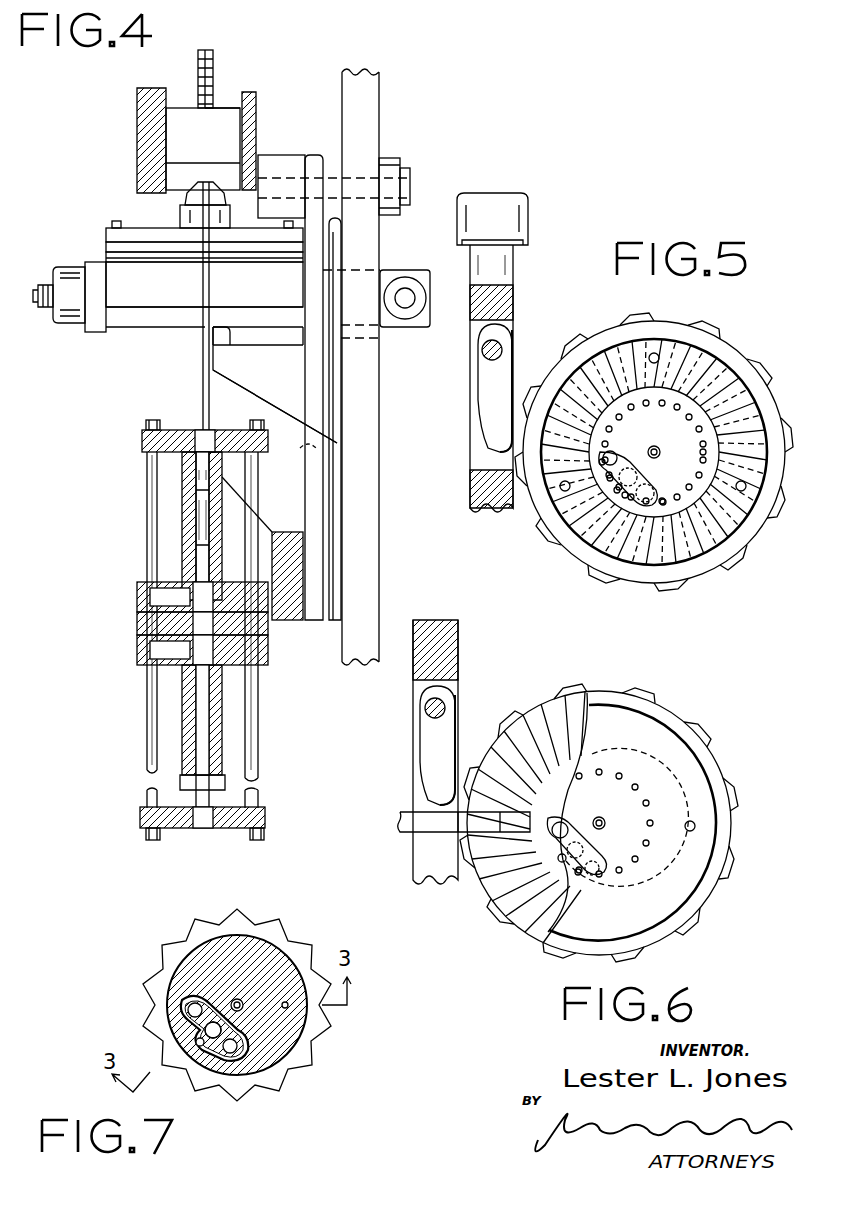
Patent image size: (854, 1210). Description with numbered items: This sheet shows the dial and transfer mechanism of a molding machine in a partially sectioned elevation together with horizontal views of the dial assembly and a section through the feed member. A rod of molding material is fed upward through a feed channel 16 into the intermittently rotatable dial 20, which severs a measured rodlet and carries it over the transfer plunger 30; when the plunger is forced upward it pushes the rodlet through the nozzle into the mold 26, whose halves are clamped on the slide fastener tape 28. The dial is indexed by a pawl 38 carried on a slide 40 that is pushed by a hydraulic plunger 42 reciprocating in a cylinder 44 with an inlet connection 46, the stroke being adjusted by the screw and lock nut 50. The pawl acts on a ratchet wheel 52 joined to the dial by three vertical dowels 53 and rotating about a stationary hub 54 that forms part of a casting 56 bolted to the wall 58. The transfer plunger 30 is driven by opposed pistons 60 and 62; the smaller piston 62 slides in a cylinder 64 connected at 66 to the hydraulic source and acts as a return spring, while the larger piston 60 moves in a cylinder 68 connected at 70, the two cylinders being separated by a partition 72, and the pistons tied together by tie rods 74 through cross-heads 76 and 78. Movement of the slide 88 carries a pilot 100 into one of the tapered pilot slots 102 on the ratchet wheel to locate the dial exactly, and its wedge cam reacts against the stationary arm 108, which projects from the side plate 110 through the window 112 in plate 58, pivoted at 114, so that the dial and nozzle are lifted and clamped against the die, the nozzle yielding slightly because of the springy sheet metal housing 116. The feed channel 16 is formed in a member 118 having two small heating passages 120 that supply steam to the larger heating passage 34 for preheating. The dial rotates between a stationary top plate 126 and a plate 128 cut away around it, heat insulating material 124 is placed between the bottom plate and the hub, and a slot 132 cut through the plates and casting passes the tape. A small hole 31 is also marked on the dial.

In FIG. 5, the feed channel 16 is at (614, 493).
In FIG. 6, the feed channel 16 is at (576, 876).
In FIG. 7, the feed channel 16 is at (200, 1047).
In FIG. 6, the dial 20 is at (657, 737).
In FIG. 4, the mold 26 is at (222, 108).
In FIG. 4, the slide fastener tape 28 is at (212, 50).
In FIG. 4, the transfer plunger 30 is at (203, 392).
In FIG. 5, the transfer plunger 30 is at (698, 360).
In FIG. 5, the hole 31 is at (700, 454).
In FIG. 7, the hole 31 is at (288, 1007).
In FIG. 7, the heating passage 34 is at (221, 1040).
In FIG. 5, the pawl 38 is at (478, 393).
In FIG. 6, the pawl 38 is at (424, 756).
In FIG. 5, the slide 40 is at (513, 300).
In FIG. 6, the slide 40 is at (458, 660).
In FIG. 5, the hydraulic plunger 42 is at (520, 228).
In FIG. 4, the cylinder 44 is at (392, 273).
In FIG. 4, the inlet connection 46 is at (405, 300).
In FIG. 4, the screw and lock nut 50 is at (48, 312).
In FIG. 5, the ratchet wheel 52 is at (750, 376).
In FIG. 6, the ratchet wheel 52 is at (730, 858).
In FIG. 5, the vertical dowels 53 is at (656, 352).
In FIG. 6, the vertical dowels 53 is at (696, 826).
In FIG. 6, the stationary hub 54 is at (559, 861).
In FIG. 7, the stationary hub 54 is at (200, 944).
In FIG. 4, the casting 56 is at (127, 302).
In FIG. 7, the casting 56 is at (262, 920).
In FIG. 4, the wall 58 is at (314, 503).
In FIG. 4, the piston 60 is at (196, 484).
In FIG. 4, the piston 62 is at (180, 776).
In FIG. 4, the cylinder 64 is at (182, 695).
In FIG. 4, the connection 66 is at (140, 650).
In FIG. 4, the cylinder 68 is at (186, 506).
In FIG. 4, the connection 70 is at (140, 604).
In FIG. 4, the partition 72 is at (140, 626).
In FIG. 4, the tie rods 74 is at (148, 566).
In FIG. 4, the cross-head 76 is at (145, 442).
In FIG. 4, the cross-head 78 is at (142, 818).
In FIG. 4, the slide 88 is at (216, 338).
In FIG. 6, the pilot 100 is at (410, 827).
In FIG. 6, the pilot slots 102 is at (532, 743).
In FIG. 4, the stationary arm 108 is at (238, 378).
In FIG. 4, the stationary side plate 110 is at (370, 557).
In FIG. 4, the window 112 is at (306, 456).
In FIG. 4, the pivot 114 is at (427, 180).
In FIG. 4, the sheet metal housing 116 is at (188, 196).
In FIG. 5, the member 118 is at (629, 468).
In FIG. 6, the member 118 is at (556, 824).
In FIG. 7, the member 118 is at (190, 1016).
In FIG. 7, the heating passages 120 is at (188, 1005).
In FIG. 4, the heat insulating material 124 is at (106, 257).
In FIG. 4, the stationary top plate 126 is at (112, 228).
In FIG. 4, the plate 128 is at (106, 243).
In FIG. 4, the slot 132 is at (205, 300).